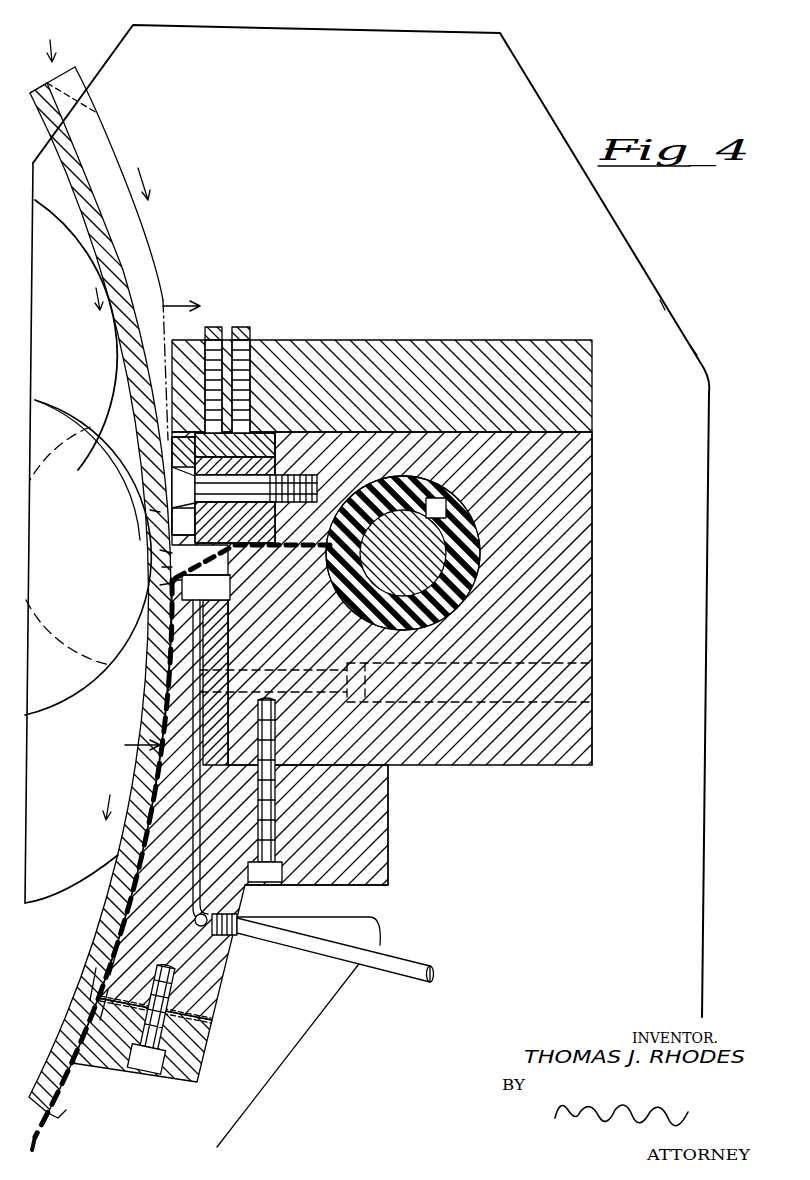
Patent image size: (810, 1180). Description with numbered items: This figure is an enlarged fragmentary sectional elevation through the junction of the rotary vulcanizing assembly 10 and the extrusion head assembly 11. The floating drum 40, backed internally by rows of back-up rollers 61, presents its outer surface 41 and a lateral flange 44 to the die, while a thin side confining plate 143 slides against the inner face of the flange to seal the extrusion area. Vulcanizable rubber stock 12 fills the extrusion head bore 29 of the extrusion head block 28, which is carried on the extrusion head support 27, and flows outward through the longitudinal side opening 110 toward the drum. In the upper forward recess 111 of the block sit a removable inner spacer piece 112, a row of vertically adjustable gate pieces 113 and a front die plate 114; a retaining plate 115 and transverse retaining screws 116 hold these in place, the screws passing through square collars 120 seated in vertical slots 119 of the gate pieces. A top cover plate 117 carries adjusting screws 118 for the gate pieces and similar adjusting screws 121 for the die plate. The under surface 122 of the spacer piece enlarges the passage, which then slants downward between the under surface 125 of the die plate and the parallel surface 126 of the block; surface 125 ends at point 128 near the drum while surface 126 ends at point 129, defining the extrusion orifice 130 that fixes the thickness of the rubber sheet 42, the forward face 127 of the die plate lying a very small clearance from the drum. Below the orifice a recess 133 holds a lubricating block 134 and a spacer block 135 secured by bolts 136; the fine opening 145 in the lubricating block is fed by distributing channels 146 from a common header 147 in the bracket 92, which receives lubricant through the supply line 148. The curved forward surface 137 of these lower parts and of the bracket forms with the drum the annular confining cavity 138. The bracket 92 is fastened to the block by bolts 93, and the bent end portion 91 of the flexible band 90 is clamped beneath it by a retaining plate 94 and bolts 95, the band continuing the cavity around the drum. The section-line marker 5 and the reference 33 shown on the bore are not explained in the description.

The rotary vulcanizing assembly 10 is at (47, 35).
The drum 40 is at (77, 133).
The flange 44 is at (150, 258).
The back-up rollers 61 is at (45, 228).
The section line 5 is at (152, 520).
The adjusting screws 121 is at (213, 326).
The adjusting screws 118 is at (243, 326).
The top cover plate 117 is at (355, 348).
The die plate 114 is at (200, 386).
The gate pieces 113 is at (248, 433).
The inner vertical spacer piece 112 is at (275, 457).
The longitudinal recess 111 is at (300, 442).
The square collar 120 is at (272, 475).
The retaining screws 116 is at (328, 480).
The retaining plate 115 is at (170, 465).
The side confining plate 143 is at (165, 447).
The forward face 127 is at (152, 512).
The under surface 125 is at (149, 558).
The extrusion orifice 130 is at (163, 567).
The point 128 is at (160, 585).
The longitudinal opening 145 is at (147, 604).
The parallel surface 126 is at (232, 573).
The point 129 is at (230, 588).
The longitudinal side opening 110 is at (278, 672).
The recess 133 is at (222, 603).
The lubricating block 134 is at (228, 625).
The bolts 136 is at (344, 662).
The vertical slot 119 is at (276, 512).
The under surface 122 is at (280, 547).
The rubber stock 12 is at (473, 522).
The shaft core 33 is at (432, 577).
The extrusion head bore 29 is at (432, 603).
The extrusion head block 28 is at (592, 470).
The extrusion head support 27 is at (668, 318).
The extrusion head assembly 11 is at (650, 246).
The distributing channels 146 is at (185, 711).
The spacer block 135 is at (405, 720).
The bolts 93 is at (266, 840).
The bracket 92 is at (388, 834).
The common header 147 is at (215, 908).
The supply line 148 is at (392, 958).
The forward surface 137 is at (126, 925).
The confining passage 138 is at (105, 952).
The outer surface 41 is at (98, 970).
The rubber sheet 42 is at (96, 996).
The bent end portion 91 is at (200, 1012).
The retaining plate 94 is at (195, 1062).
The bolts 95 is at (150, 1075).
The band 90 is at (48, 1136).